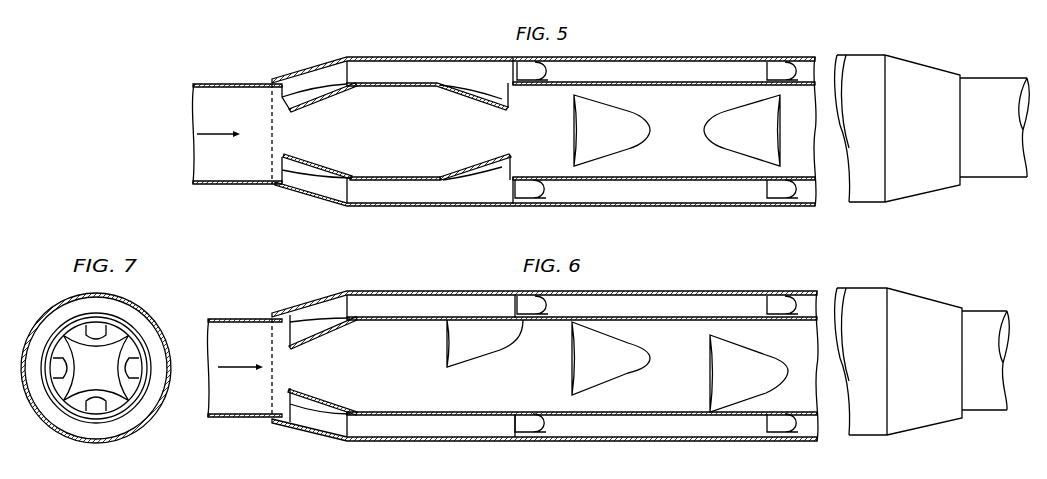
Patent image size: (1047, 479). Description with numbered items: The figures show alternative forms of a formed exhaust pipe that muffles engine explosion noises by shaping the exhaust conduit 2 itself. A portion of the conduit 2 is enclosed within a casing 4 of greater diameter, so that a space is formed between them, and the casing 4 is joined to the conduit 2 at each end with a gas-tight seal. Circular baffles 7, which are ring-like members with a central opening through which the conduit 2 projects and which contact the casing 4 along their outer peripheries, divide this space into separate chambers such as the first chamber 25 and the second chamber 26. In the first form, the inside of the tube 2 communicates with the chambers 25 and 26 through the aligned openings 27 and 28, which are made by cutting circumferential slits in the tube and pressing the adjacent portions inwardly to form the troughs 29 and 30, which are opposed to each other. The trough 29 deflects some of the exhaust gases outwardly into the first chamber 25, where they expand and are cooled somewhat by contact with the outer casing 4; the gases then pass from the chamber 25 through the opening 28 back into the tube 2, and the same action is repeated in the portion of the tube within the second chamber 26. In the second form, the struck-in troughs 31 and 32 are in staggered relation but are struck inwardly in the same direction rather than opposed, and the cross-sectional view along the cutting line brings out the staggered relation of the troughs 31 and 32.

In FIG. 5, the exhaust conduit 2 is at (992, 83).
In FIG. 6, the exhaust conduit 2 is at (979, 316).
In FIG. 5, the casing 4 is at (701, 58).
In FIG. 5, the circular baffles 7 is at (543, 72).
In FIG. 6, the circular baffles 7 is at (367, 418).
In FIG. 5, the first chamber 25 is at (433, 195).
In FIG. 5, the second chamber 26 is at (647, 193).
In FIG. 5, the opening 27 is at (308, 192).
In FIG. 5, the opening 28 is at (502, 168).
In FIG. 5, the trough 29 is at (312, 158).
In FIG. 5, the trough 30 is at (472, 166).
In FIG. 6, the struck-in trough 31 is at (346, 328).
In FIG. 7, the struck-in trough 31 is at (100, 350).
In FIG. 6, the struck-in trough 32 is at (457, 338).
In FIG. 7, the struck-in trough 32 is at (125, 353).